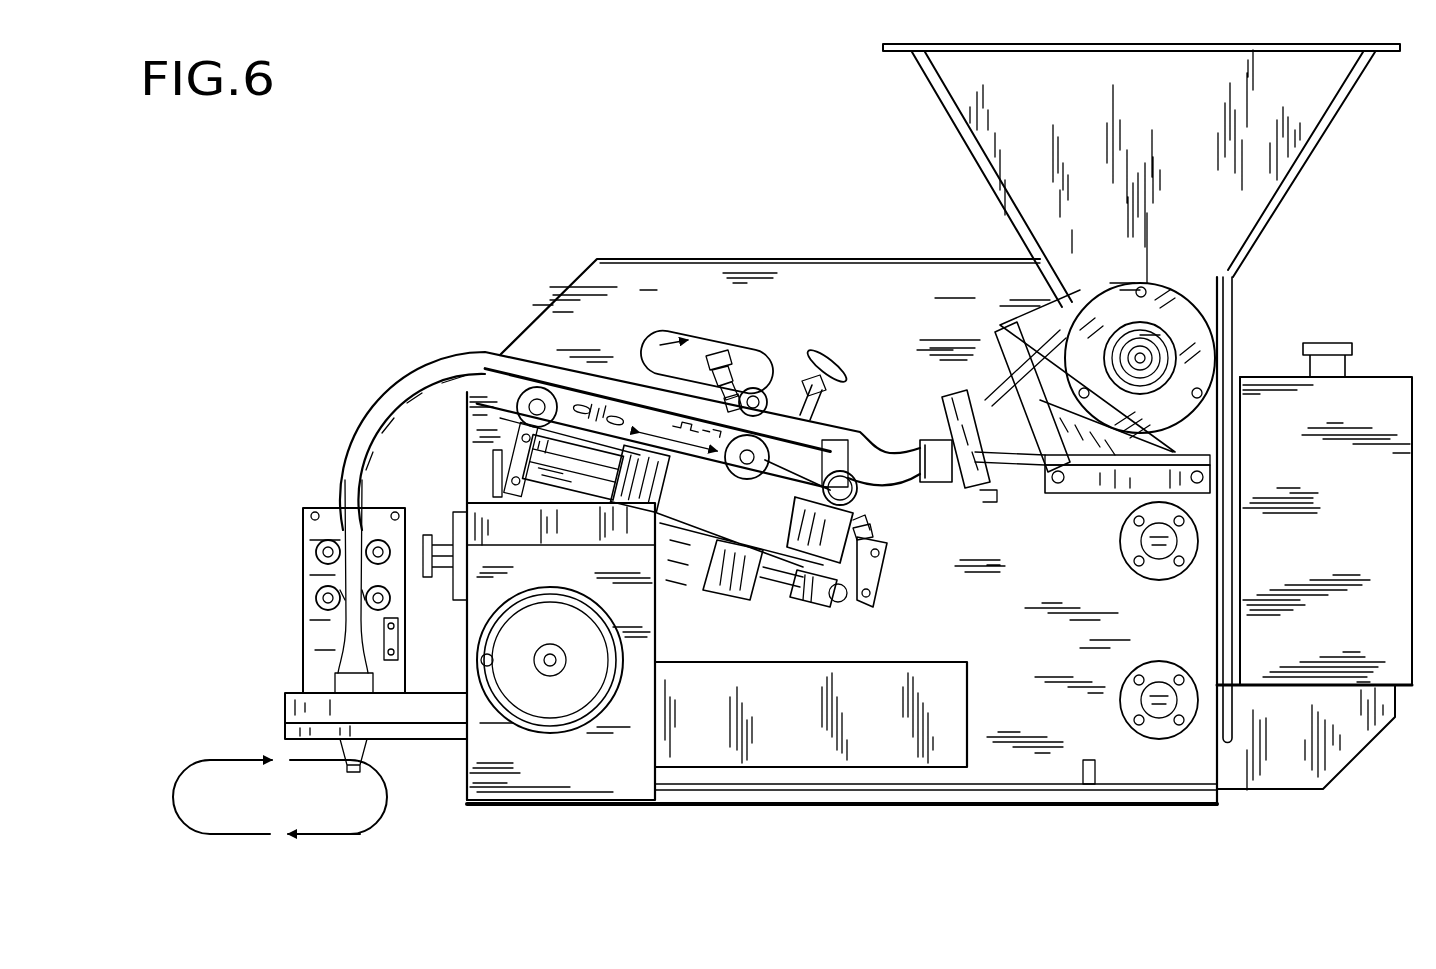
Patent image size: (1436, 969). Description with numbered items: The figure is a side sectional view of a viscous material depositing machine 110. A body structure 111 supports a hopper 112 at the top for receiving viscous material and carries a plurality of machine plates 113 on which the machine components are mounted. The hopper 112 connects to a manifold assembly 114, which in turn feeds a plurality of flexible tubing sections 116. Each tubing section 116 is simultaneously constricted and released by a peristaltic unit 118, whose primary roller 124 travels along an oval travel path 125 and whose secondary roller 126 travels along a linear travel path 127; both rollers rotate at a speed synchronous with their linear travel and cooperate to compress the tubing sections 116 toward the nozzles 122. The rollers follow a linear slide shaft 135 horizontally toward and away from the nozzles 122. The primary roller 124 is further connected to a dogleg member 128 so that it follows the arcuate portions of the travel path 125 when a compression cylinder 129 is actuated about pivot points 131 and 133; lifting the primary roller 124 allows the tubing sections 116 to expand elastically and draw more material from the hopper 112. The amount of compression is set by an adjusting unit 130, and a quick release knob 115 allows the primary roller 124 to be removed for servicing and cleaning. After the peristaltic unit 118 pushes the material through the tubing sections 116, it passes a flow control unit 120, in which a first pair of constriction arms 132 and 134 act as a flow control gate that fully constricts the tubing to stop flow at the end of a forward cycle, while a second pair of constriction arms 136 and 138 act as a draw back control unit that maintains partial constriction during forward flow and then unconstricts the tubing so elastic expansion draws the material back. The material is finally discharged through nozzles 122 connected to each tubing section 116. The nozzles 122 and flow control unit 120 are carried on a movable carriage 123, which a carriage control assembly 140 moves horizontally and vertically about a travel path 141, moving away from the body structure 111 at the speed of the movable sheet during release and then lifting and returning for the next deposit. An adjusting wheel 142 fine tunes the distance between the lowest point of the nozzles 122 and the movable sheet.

The viscous material depositing machine 110 is at (663, 110).
The body structure 111 is at (872, 257).
The hopper 112 is at (1303, 183).
The machine plates 113 is at (952, 308).
The manifold assembly 114 is at (1010, 447).
The quick release knob 115 is at (822, 355).
The flexible tubing sections 116 is at (437, 358).
The peristaltic unit 118 is at (777, 350).
The flow control unit 120 is at (300, 540).
The nozzles 122 is at (368, 763).
The movable carriage 123 is at (285, 713).
The primary roller 124 is at (744, 393).
The oval travel path 125 is at (640, 350).
The secondary roller 126 is at (777, 452).
The linear travel path 127 is at (688, 447).
The dogleg member 128 is at (822, 418).
The compression cylinder 129 is at (677, 590).
The adjusting unit 130 is at (718, 352).
The pivot point 131 is at (862, 497).
The constriction arm 132 is at (320, 505).
The pivot point 133 is at (828, 570).
The constriction arm 134 is at (390, 522).
The linear slide shaft 135 is at (893, 548).
The constriction arm 136 is at (306, 605).
The constriction arm 138 is at (398, 608).
The carriage control assembly 140 is at (805, 750).
The travel path 141 is at (232, 836).
The adjusting wheel 142 is at (545, 745).